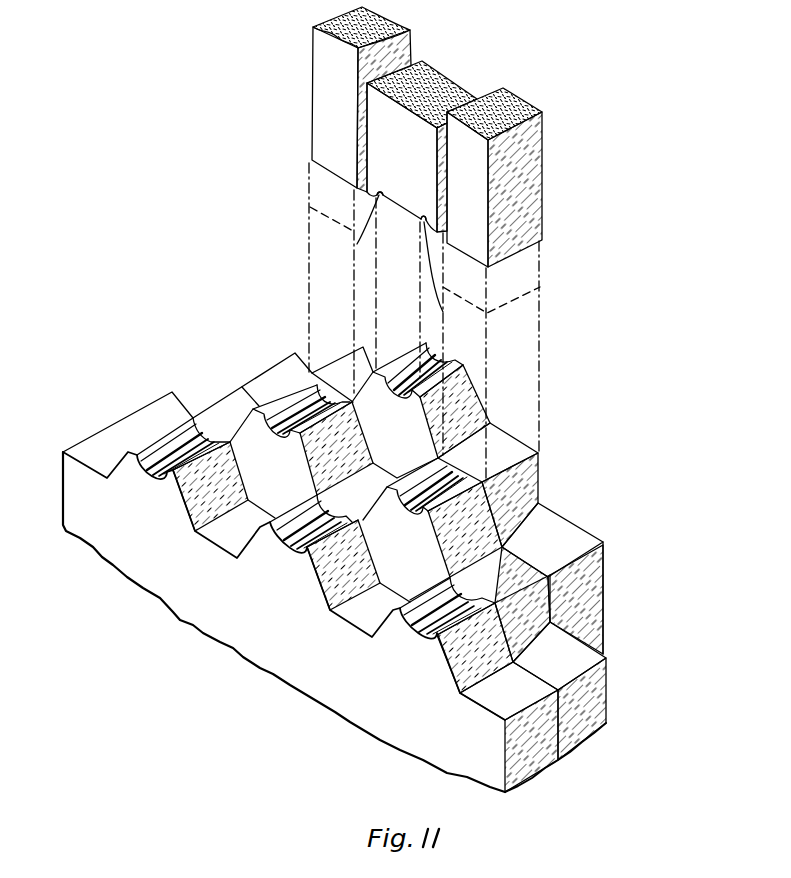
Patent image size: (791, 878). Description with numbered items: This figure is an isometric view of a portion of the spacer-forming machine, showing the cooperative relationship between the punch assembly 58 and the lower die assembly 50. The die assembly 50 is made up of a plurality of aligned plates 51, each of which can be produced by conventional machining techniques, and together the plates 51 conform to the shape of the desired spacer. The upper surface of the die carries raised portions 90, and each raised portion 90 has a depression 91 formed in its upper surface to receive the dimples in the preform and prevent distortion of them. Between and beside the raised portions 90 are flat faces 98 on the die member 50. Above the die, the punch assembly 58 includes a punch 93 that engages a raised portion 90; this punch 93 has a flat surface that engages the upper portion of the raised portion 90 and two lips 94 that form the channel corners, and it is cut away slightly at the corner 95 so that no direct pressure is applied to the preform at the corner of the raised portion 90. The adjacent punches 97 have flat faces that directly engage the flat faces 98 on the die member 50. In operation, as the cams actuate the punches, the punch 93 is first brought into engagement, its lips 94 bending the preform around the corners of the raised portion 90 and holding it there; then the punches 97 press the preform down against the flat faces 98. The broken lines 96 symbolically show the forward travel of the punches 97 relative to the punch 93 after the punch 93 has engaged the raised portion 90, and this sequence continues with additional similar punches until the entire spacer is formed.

The lower die assembly 50 is at (566, 494).
The plates 51 is at (603, 590).
The punch assembly 58 is at (556, 159).
The raised portions 90 is at (493, 418).
The depression 91 is at (448, 362).
The punches 93 is at (456, 84).
The lips 94 is at (358, 243).
The corner 95 is at (380, 197).
The broken lines 96 is at (309, 181).
The punches 97 is at (313, 26).
The flat faces 98 is at (517, 437).